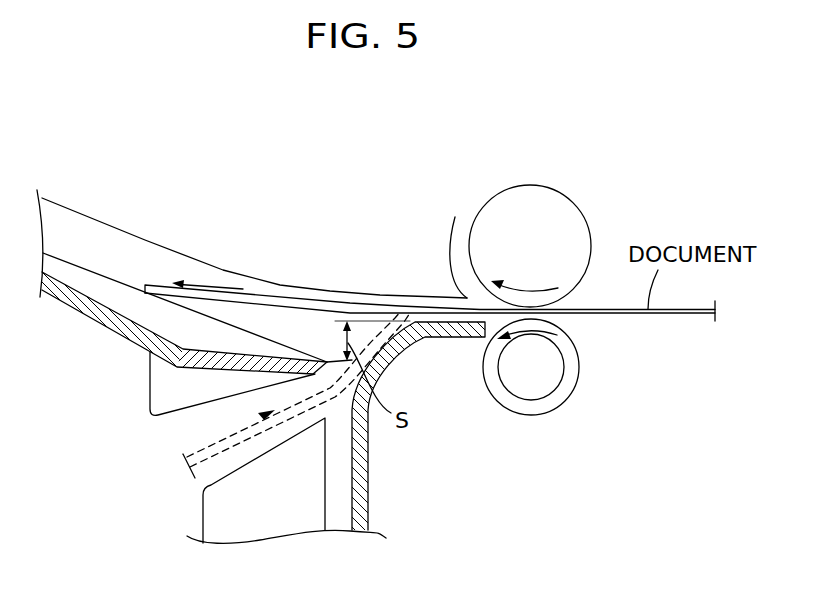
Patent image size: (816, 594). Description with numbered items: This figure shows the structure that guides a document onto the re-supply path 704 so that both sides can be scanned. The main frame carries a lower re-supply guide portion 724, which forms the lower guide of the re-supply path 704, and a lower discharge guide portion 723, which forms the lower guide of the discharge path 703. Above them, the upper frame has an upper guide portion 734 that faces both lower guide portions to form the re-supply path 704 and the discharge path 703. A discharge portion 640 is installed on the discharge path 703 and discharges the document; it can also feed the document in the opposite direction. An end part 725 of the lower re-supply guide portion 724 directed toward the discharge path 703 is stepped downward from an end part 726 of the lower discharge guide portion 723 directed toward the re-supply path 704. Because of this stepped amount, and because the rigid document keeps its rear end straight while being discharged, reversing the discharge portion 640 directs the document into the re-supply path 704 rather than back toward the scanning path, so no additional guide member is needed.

The re-supply path 704 is at (87, 238).
The discharge path 703 is at (445, 304).
The upper guide portion 734 is at (158, 248).
The lower re-supply guide portion 724 is at (117, 282).
The end part of the lower re-supply guide portion 725 is at (322, 347).
The end part of the lower discharge guide portion 726 is at (402, 320).
The discharge portion 640 is at (594, 194).
The lower discharge guide portion 723 is at (463, 322).